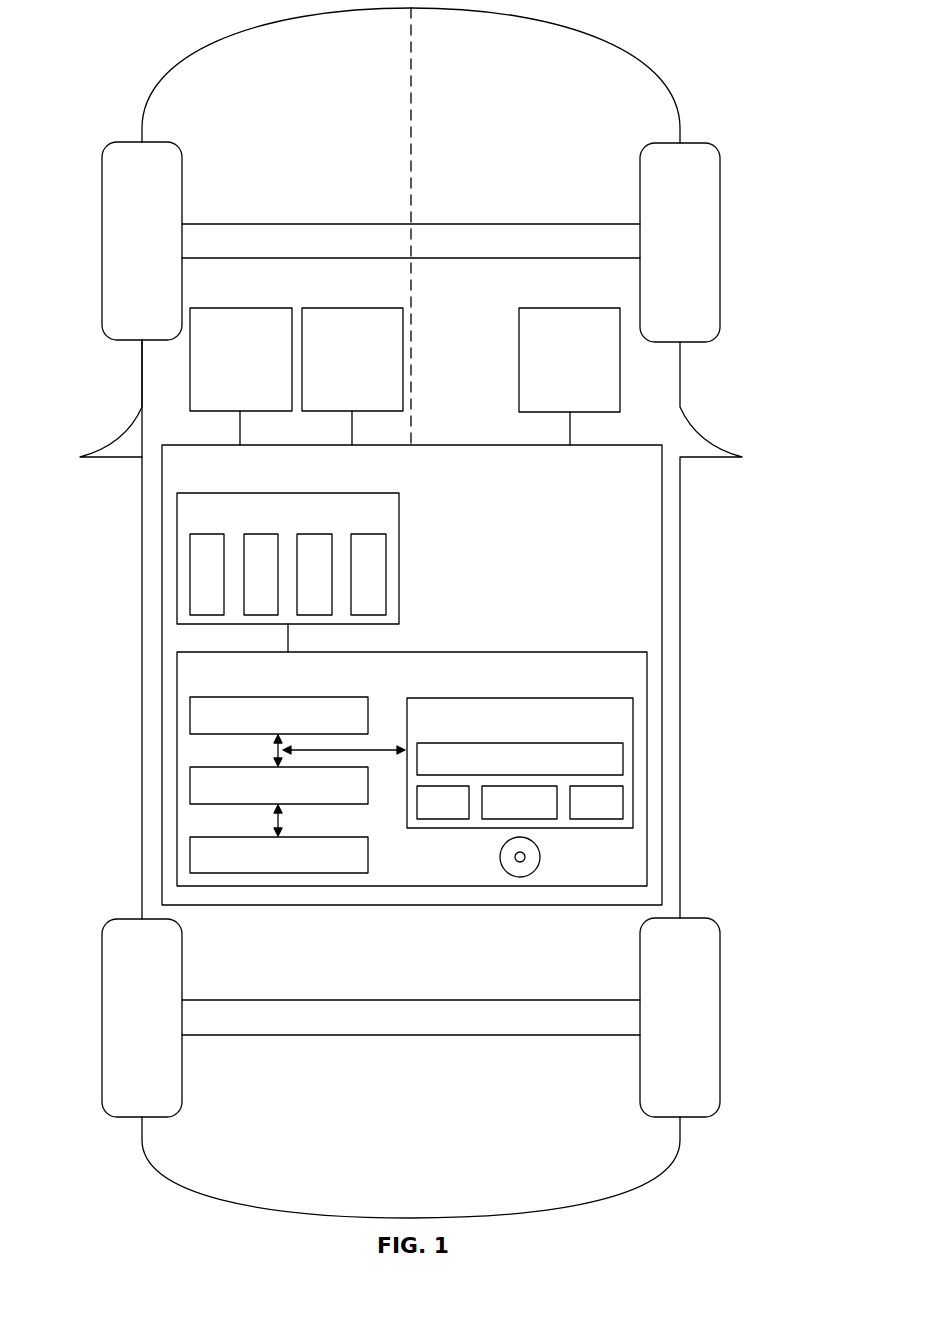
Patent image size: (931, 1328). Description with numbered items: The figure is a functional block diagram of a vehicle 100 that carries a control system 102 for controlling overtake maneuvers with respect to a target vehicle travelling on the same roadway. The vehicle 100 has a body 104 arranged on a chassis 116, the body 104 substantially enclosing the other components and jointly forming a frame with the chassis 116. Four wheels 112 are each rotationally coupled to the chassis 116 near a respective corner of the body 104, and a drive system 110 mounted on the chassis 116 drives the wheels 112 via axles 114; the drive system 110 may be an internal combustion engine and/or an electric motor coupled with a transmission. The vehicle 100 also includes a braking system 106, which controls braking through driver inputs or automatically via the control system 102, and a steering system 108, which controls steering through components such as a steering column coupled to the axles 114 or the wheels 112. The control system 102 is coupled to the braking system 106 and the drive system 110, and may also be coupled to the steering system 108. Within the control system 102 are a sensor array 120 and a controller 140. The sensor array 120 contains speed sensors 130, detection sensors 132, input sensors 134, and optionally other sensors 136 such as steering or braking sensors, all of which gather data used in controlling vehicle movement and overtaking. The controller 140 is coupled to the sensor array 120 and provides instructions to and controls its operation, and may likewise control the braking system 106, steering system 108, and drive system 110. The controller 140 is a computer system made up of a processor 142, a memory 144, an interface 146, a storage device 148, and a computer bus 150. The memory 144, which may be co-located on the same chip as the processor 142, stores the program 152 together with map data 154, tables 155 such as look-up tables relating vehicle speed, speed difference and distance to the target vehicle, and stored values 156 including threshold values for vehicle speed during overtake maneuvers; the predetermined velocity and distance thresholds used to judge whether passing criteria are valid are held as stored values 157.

The vehicle 100 is at (114, 28).
The control system 102 is at (447, 445).
The body 104 is at (142, 508).
The braking system 106 is at (217, 308).
The steering system 108 is at (327, 308).
The drive system 110 is at (553, 308).
The wheels 112 is at (115, 180).
The axles 114 is at (275, 228).
The chassis 116 is at (418, 84).
The sensor array 120 is at (238, 493).
The speed sensors 130 is at (190, 566).
The detection sensors 132 is at (244, 603).
The input sensors 134 is at (315, 616).
The other sensors 136 is at (386, 565).
The controller 140 is at (637, 652).
The processor 142 is at (190, 716).
The memory 144 is at (635, 712).
The interface 146 is at (190, 784).
The storage device 148 is at (190, 854).
The computer bus 150 is at (272, 750).
The program 152 is at (623, 758).
The map data 154 is at (443, 819).
The tables 155 is at (543, 819).
The stored values 156 is at (520, 870).
The stored values 157 is at (623, 800).